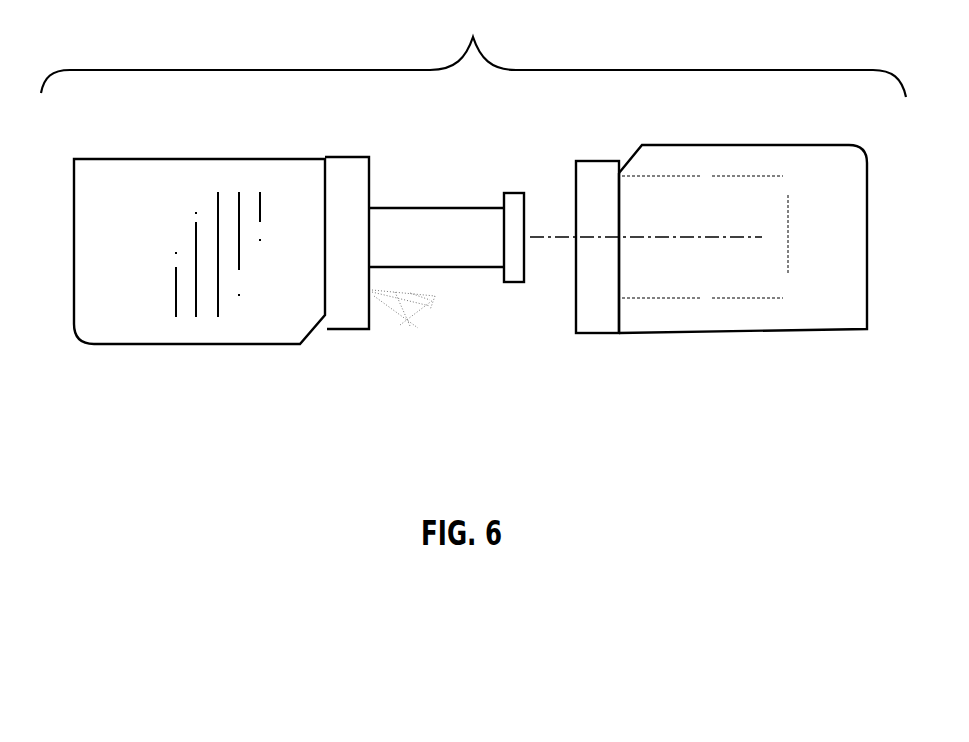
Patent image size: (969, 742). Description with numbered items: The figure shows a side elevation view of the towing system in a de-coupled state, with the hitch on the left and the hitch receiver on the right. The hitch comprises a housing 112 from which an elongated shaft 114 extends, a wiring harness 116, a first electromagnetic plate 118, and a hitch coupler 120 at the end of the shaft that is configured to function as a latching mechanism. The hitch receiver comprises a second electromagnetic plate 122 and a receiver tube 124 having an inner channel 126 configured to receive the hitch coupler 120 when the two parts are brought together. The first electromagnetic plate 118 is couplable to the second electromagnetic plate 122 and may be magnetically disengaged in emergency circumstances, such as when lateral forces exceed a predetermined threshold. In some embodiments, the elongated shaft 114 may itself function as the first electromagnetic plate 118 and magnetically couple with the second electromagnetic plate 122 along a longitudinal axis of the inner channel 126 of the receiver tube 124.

The housing 112 is at (192, 344).
The elongated shaft 114 is at (467, 268).
The wiring harness 116 is at (403, 327).
The first electromagnetic plate 118 is at (343, 331).
The hitch coupler 120 is at (514, 283).
The second electromagnetic plate 122 is at (603, 334).
The receiver tube 124 is at (835, 331).
The inner channel 126 is at (727, 265).